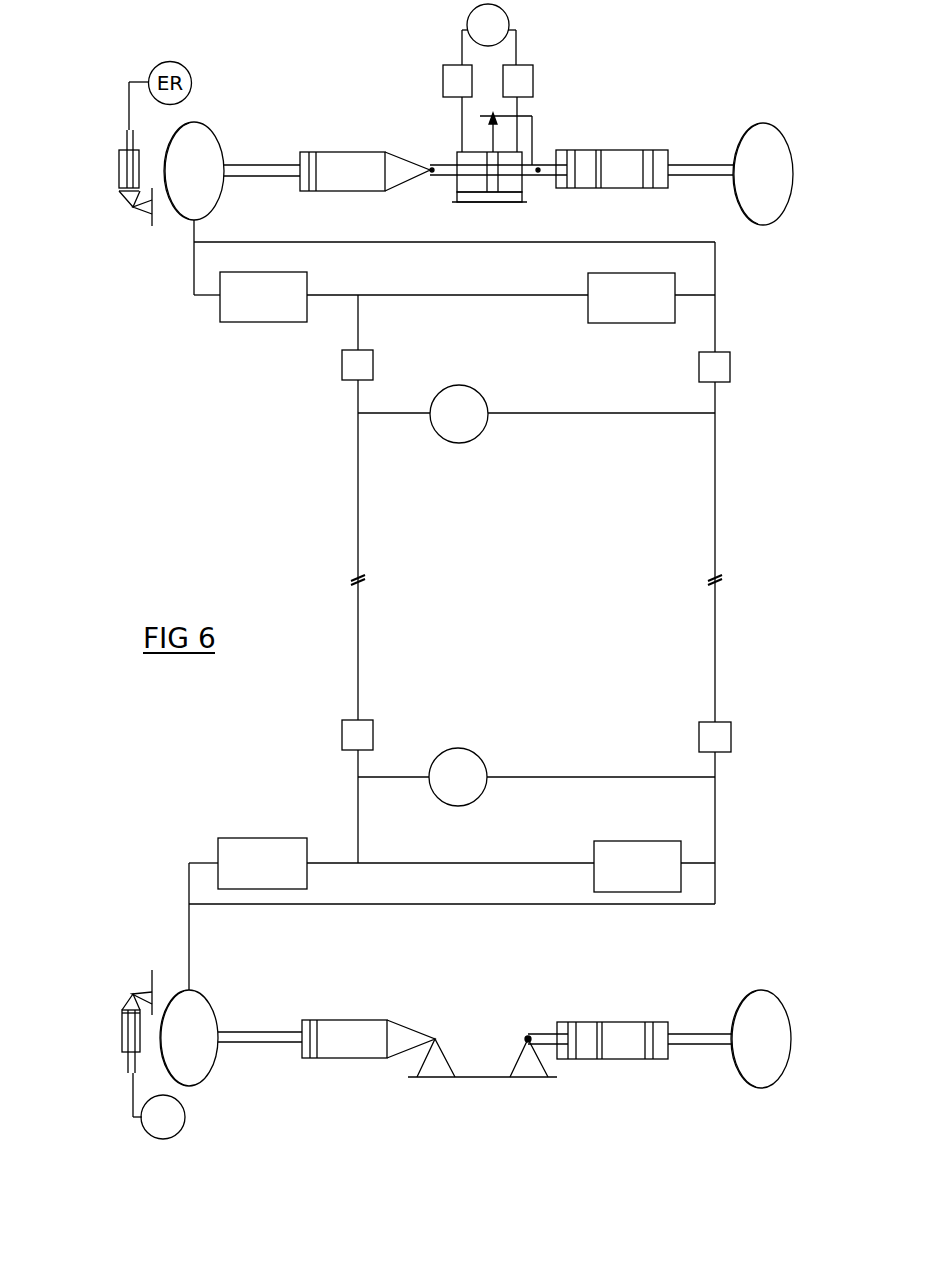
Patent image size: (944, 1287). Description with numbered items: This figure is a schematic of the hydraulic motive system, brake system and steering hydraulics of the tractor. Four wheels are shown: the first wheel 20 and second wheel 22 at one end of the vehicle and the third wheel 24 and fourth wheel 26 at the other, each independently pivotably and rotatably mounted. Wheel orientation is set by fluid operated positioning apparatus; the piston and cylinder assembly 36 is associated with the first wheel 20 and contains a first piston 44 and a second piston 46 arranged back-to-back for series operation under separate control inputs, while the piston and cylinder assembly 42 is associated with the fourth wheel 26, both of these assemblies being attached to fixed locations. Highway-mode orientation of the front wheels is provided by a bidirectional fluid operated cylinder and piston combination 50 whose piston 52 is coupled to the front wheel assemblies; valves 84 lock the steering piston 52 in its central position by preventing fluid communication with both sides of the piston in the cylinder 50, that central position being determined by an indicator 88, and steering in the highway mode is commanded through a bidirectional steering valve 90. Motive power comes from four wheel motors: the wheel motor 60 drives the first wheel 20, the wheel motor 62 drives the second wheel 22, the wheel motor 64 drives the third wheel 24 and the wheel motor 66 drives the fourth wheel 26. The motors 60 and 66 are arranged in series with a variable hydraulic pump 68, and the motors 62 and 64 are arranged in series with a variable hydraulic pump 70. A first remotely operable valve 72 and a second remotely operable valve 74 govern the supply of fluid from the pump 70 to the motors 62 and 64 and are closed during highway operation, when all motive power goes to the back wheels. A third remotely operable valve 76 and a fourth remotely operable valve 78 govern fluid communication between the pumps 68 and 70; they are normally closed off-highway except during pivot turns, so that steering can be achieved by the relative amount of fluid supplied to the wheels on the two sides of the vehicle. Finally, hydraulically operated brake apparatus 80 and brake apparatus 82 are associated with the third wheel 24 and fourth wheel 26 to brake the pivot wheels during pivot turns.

The first wheel 20 is at (736, 1001).
The second wheel 22 is at (737, 139).
The third wheel 24 is at (222, 141).
The fourth wheel 26 is at (212, 1003).
The piston and cylinder assembly 36 is at (612, 1073).
The piston and cylinder assembly 42 is at (312, 1020).
The first piston 44 is at (648, 1060).
The second piston 46 is at (572, 1060).
The bidirectional fluid operated cylinder and piston combination 50 is at (613, 149).
The piston 52 is at (598, 150).
The wheel motor 60 is at (600, 841).
The wheel motor 62 is at (588, 277).
The wheel motor 64 is at (307, 279).
The wheel motor 66 is at (218, 845).
The variable hydraulic pump 68 is at (478, 757).
The variable hydraulic pump 70 is at (484, 400).
The first remotely operable valve 72 is at (731, 363).
The second remotely operable valve 74 is at (342, 366).
The third remotely operable valve 76 is at (342, 724).
The fourth remotely operable valve 78 is at (732, 732).
The hydraulically operated brake apparatus 80 is at (121, 193).
The hydraulically operated brake apparatus 82 is at (128, 1015).
The valves 84 is at (443, 75).
The indicator 88 is at (480, 116).
The bidirectional steering valve 90 is at (469, 17).